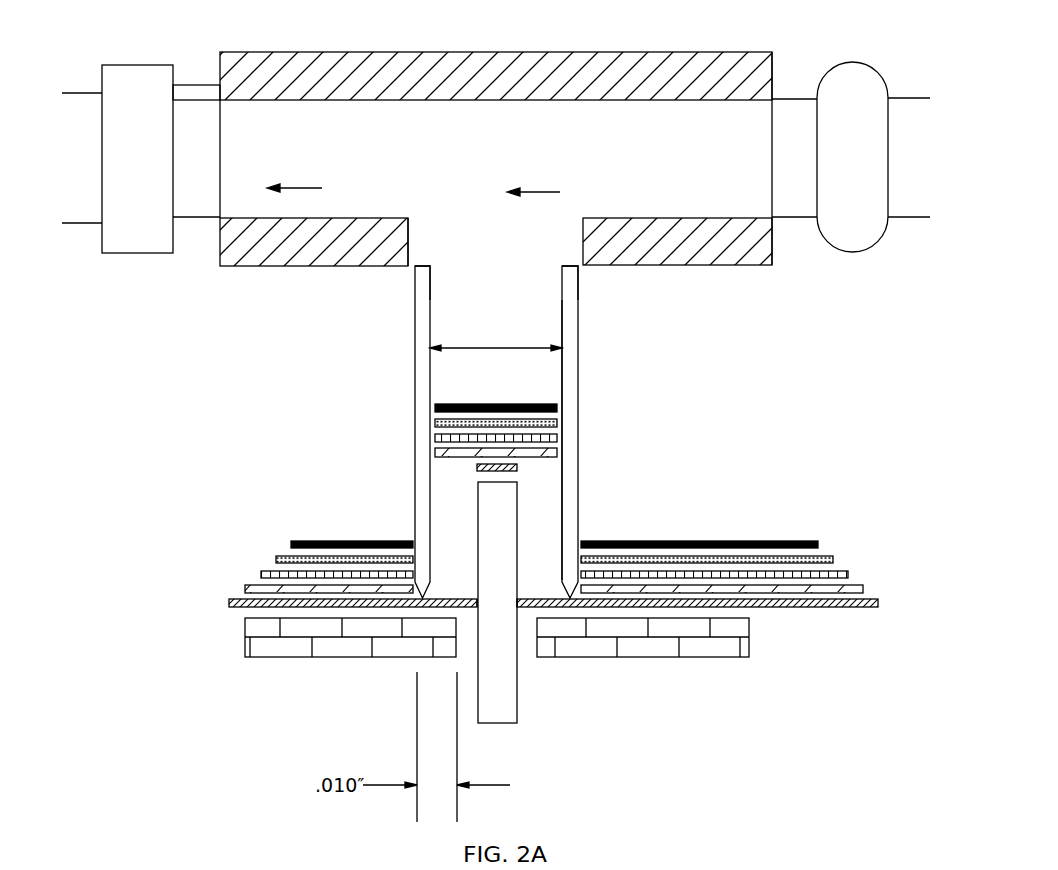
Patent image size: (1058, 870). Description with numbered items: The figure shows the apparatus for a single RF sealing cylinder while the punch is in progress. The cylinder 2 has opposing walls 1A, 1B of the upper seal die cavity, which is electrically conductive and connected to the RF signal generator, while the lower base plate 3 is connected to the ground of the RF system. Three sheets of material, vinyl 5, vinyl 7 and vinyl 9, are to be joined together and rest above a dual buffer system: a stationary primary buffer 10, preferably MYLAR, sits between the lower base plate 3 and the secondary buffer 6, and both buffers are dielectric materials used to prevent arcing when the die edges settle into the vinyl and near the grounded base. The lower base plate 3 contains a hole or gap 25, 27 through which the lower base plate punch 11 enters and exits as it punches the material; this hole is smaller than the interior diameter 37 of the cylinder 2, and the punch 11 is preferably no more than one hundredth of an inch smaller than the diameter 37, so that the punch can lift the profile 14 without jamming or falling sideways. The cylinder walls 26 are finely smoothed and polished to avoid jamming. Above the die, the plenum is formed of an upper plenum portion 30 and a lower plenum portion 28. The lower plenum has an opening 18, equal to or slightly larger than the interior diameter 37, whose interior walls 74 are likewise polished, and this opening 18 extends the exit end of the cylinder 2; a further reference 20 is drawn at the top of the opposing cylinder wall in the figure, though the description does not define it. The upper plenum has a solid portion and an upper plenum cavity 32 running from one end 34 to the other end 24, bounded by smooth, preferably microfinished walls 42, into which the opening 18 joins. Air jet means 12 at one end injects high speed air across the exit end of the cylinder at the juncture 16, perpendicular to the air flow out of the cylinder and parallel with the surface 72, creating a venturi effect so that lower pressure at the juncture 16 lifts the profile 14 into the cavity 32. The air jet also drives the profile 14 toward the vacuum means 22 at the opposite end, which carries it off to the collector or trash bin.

The vacuum means 22 is at (115, 63).
The other end 24 is at (197, 85).
The upper plenum portion 30 is at (522, 147).
The upper plenum cavity 32 is at (375, 133).
The walls 42 is at (545, 83).
The one end 34 is at (772, 98).
The air jet means 12 is at (853, 62).
The surface 72 is at (365, 218).
The walls 74 is at (408, 233).
The lower plenum portion 28 is at (755, 266).
The juncture 16 is at (572, 213).
The opening 18 is at (473, 240).
The right tube opening 20 is at (578, 267).
The cylinder walls 26 is at (556, 363).
The interior diameter 37 is at (467, 350).
The cylinder 2 is at (473, 419).
The opposing wall 1A is at (422, 455).
The opposing wall 1B is at (571, 415).
The profile 14 is at (532, 470).
The vinyl 5 is at (795, 540).
The vinyl 7 is at (825, 556).
The vinyl 9 is at (847, 571).
The secondary buffer 6 is at (862, 585).
The primary buffer 10 is at (878, 599).
The lower base plate 3 is at (252, 657).
The hole or gap 25 is at (466, 612).
The hole or gap 27 is at (531, 612).
The lower base plate punch 11 is at (517, 723).